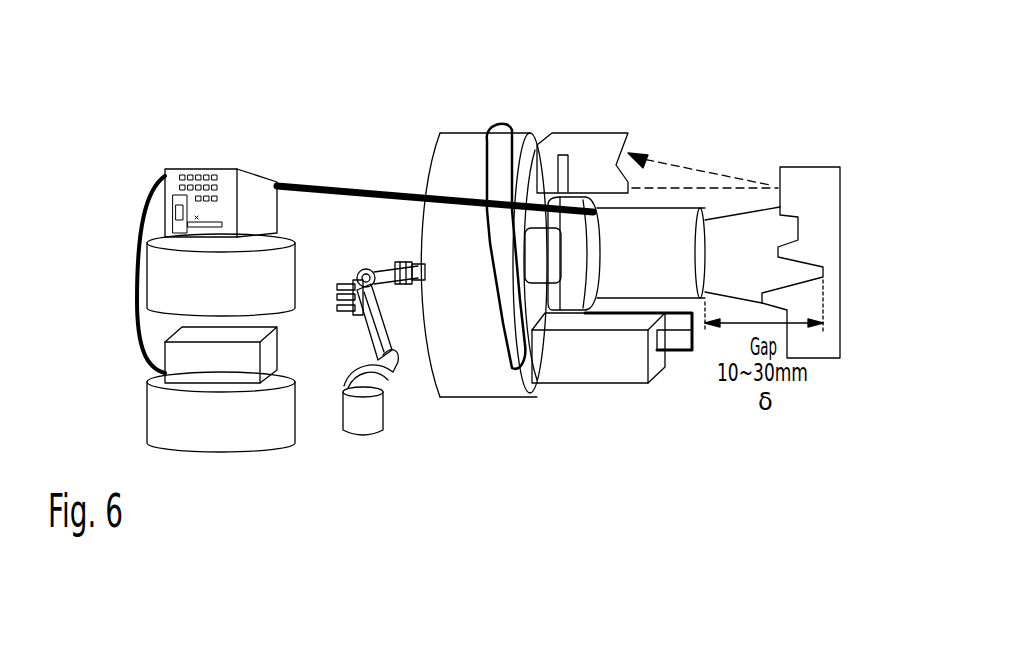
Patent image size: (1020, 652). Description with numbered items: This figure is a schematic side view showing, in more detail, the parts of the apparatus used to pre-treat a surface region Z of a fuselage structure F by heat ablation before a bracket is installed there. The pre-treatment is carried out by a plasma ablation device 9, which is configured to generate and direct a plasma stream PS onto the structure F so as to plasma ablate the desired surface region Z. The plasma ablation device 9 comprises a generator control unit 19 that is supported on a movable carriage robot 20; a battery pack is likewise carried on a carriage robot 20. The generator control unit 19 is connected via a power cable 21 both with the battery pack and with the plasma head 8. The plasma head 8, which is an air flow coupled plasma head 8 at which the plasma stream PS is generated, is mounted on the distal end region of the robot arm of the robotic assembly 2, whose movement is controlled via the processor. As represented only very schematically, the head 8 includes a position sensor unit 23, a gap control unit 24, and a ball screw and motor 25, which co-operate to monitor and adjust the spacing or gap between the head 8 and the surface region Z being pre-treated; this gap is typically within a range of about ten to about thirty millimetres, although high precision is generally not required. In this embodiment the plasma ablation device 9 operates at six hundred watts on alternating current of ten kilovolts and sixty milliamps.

The robotic assembly 2 is at (372, 458).
The plasma head 8 is at (420, 114).
The plasma ablation device 9 is at (234, 92).
The generator control unit 19 is at (172, 159).
The carriage robot 20 is at (231, 297).
The power cable 21 is at (318, 182).
The position sensor unit 23 is at (598, 133).
The gap control unit 24 is at (607, 372).
The ball screw and motor 25 is at (568, 268).
The plasma stream PS is at (733, 232).
The surface region Z is at (801, 204).
The fuselage structure F is at (832, 347).